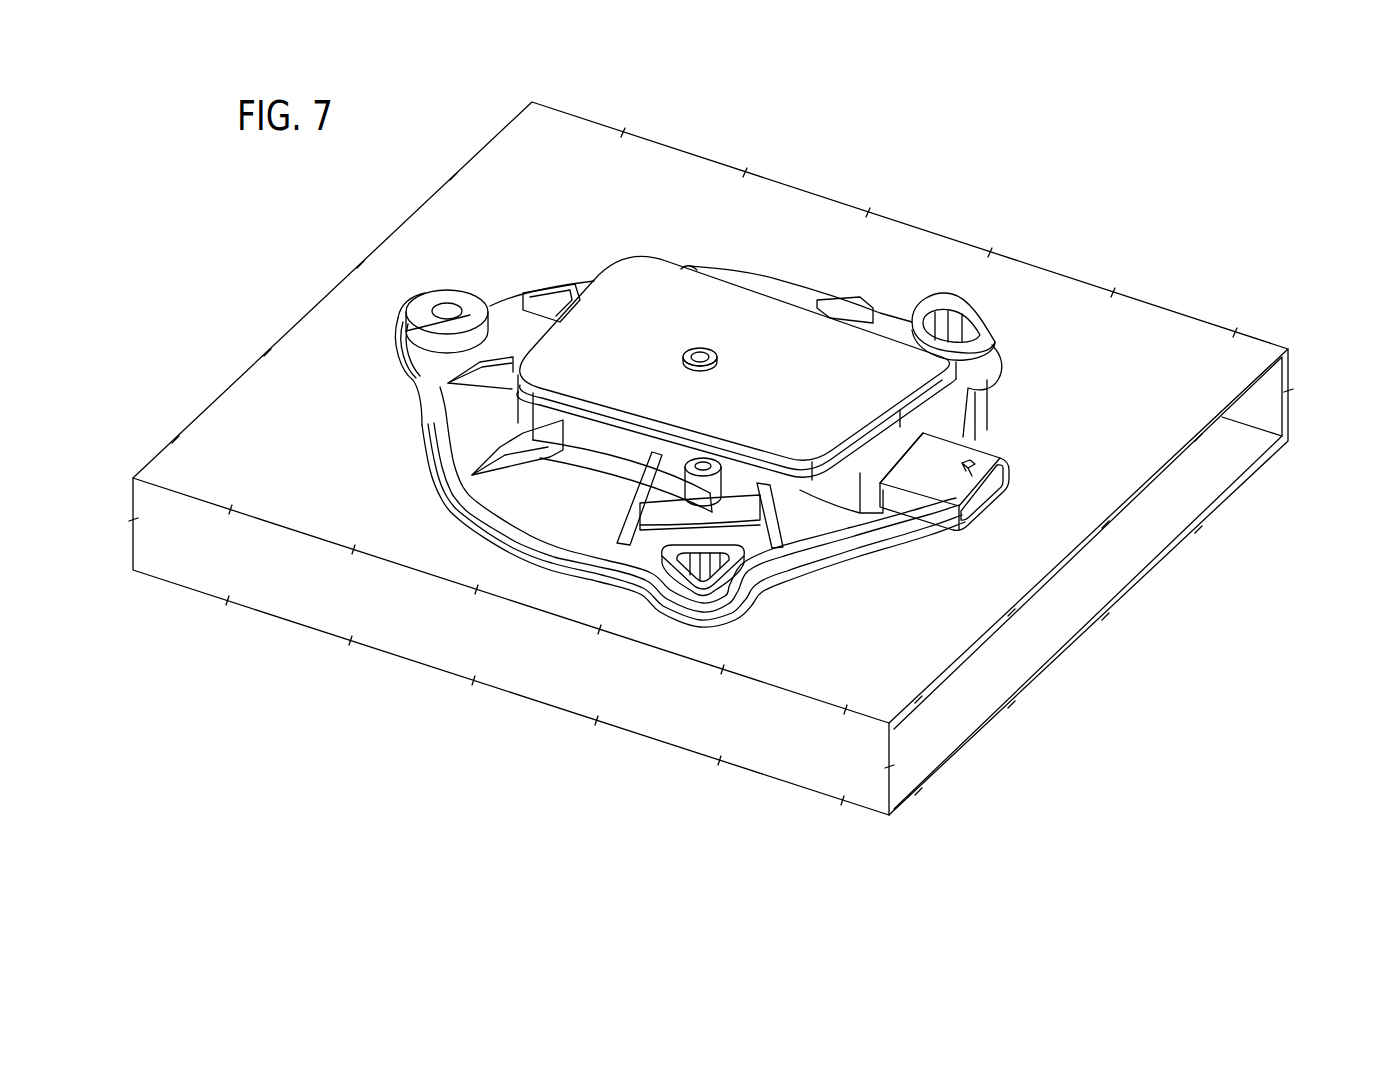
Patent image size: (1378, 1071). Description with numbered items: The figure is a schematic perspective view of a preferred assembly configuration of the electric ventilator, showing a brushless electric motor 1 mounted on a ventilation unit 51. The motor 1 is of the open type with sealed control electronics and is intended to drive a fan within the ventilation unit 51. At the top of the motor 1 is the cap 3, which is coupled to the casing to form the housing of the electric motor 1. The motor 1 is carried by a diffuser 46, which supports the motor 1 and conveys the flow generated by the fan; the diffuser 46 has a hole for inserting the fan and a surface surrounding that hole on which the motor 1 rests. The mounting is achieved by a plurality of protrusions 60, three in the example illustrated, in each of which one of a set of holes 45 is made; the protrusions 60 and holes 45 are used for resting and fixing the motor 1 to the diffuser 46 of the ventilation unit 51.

The electric motor 1 is at (654, 482).
The cap 3 is at (647, 278).
The holes 45 is at (448, 312).
The protrusions 60 is at (395, 358).
The ventilation unit 51 is at (1133, 292).
The diffuser 46 is at (1173, 398).